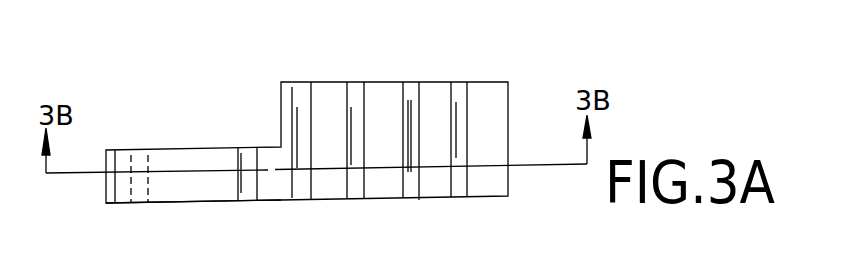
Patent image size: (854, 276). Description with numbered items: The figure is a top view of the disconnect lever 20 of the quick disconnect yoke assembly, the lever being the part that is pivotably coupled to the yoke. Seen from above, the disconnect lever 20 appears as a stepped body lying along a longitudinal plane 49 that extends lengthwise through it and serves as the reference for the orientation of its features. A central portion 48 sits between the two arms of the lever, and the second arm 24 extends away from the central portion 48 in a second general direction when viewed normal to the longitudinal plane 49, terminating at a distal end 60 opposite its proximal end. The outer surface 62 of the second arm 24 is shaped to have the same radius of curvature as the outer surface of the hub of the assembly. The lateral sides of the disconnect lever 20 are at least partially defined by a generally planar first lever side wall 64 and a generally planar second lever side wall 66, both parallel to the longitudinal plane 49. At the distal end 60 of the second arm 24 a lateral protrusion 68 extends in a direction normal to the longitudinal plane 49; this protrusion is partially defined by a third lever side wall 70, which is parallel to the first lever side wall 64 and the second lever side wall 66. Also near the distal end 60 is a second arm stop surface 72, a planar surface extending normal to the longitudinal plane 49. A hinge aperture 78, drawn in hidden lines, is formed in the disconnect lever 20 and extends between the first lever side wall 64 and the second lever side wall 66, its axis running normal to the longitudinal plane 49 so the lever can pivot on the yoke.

The disconnect lever 20 is at (473, 63).
The second arm 24 is at (474, 200).
The central portion 48 is at (115, 207).
The longitudinal plane 49 is at (65, 176).
The distal end 60 is at (442, 200).
The outer surface 62 is at (359, 271).
The first lever side wall 64 is at (220, 203).
The second lever side wall 66 is at (223, 147).
The lateral protrusion 68 is at (395, 110).
The third lever side wall 70 is at (320, 82).
The second arm stop surface 72 is at (140, 271).
The hinge aperture 78 is at (143, 158).